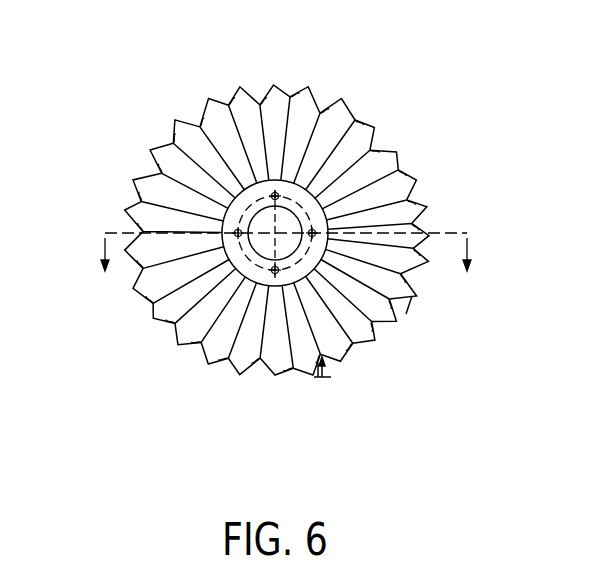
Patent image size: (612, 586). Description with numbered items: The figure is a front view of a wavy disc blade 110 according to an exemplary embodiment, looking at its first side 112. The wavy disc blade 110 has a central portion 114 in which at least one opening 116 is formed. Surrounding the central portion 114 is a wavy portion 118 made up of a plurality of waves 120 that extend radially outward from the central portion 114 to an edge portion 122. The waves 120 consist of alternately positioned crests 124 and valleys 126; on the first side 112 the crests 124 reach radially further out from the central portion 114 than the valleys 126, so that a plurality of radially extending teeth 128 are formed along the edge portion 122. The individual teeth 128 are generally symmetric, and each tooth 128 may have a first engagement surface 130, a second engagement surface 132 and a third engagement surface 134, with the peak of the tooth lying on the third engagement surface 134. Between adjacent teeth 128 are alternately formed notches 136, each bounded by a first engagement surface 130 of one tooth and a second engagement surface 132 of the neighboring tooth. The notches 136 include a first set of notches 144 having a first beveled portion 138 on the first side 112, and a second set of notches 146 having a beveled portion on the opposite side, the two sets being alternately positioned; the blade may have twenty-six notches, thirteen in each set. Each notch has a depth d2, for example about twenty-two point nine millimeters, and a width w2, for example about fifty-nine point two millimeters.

The wavy disc blade 110 is at (268, 245).
The first side 112 is at (403, 222).
The central portion 114 is at (353, 345).
The opening 116 is at (407, 263).
The wavy portion 118 is at (340, 363).
The waves 120 is at (400, 183).
The edge portion 122 is at (350, 117).
The crests 124 is at (332, 122).
The valleys 126 is at (322, 112).
The teeth 128 is at (300, 95).
The first engagement surface 130 is at (290, 95).
The second engagement surface 132 is at (323, 102).
The third engagement surface 134 is at (300, 94).
The notches 136 is at (258, 94).
The first beveled portion 138 is at (200, 127).
The first set of notches 144 is at (148, 165).
The second set of notches 146 is at (298, 378).
The width w2 is at (410, 316).
The depth d2 is at (326, 377).